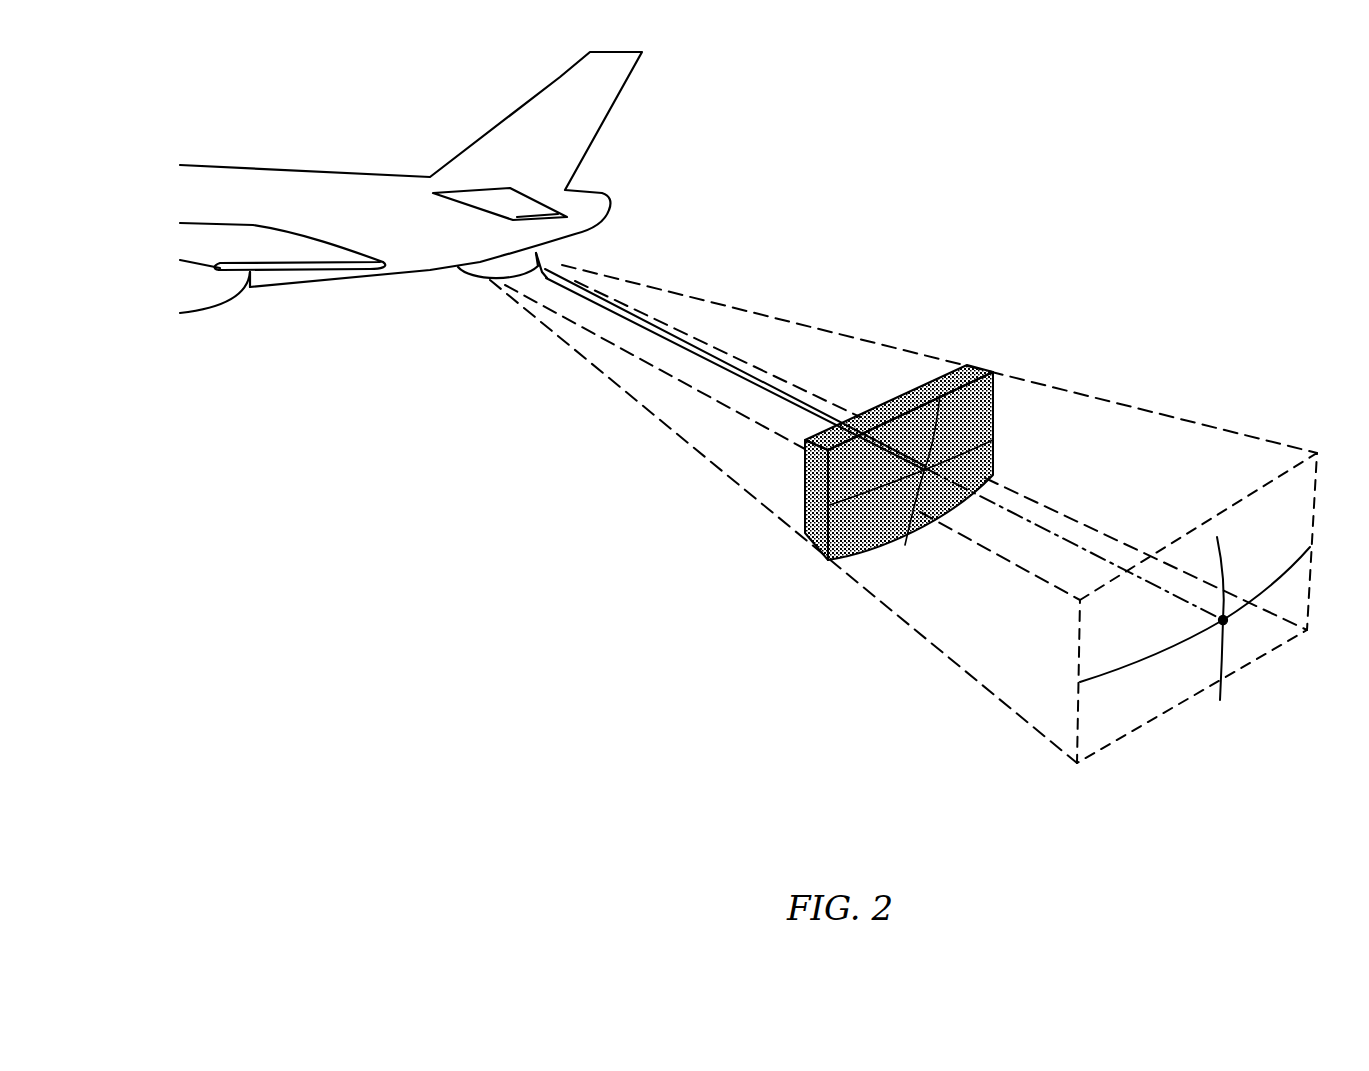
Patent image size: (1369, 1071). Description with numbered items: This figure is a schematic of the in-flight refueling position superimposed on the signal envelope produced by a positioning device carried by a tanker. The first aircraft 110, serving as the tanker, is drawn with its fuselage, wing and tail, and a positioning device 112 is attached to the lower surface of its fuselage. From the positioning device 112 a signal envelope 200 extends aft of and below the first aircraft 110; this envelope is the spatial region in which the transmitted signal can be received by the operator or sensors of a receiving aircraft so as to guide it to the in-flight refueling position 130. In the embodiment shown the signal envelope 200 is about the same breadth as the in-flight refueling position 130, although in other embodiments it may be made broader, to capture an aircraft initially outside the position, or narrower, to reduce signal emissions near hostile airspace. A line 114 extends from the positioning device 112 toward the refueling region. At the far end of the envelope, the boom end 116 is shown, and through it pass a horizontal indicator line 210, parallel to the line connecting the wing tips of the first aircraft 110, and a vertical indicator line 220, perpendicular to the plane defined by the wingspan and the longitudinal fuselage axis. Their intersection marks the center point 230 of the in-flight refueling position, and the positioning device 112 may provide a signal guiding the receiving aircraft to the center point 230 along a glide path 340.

The first aircraft 110 is at (270, 185).
The positioning device 112 is at (478, 279).
The sensor beam / line of sight 114 is at (636, 326).
The boom end 116 is at (945, 455).
The in-flight refueling position 130 is at (793, 493).
The signal envelope 200 is at (920, 592).
The horizontal indicator line 210 is at (1152, 657).
The vertical indicator line 220 is at (1227, 643).
The center point 230 is at (1005, 495).
The glide path 340 is at (1067, 538).